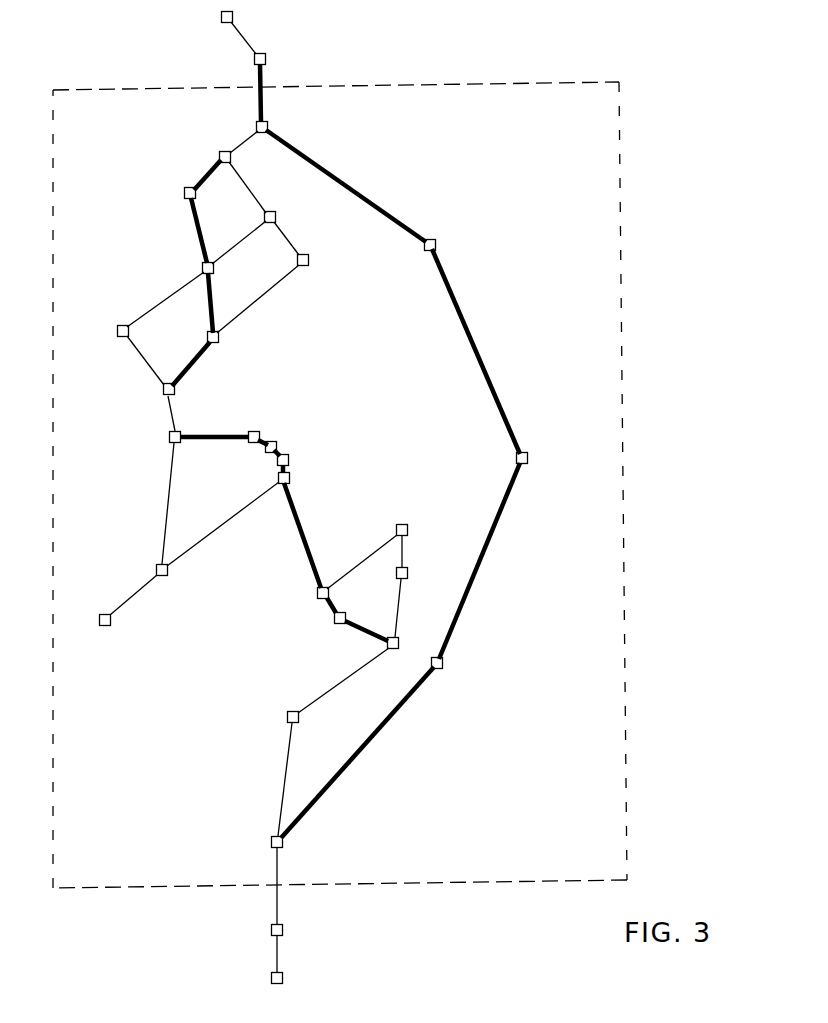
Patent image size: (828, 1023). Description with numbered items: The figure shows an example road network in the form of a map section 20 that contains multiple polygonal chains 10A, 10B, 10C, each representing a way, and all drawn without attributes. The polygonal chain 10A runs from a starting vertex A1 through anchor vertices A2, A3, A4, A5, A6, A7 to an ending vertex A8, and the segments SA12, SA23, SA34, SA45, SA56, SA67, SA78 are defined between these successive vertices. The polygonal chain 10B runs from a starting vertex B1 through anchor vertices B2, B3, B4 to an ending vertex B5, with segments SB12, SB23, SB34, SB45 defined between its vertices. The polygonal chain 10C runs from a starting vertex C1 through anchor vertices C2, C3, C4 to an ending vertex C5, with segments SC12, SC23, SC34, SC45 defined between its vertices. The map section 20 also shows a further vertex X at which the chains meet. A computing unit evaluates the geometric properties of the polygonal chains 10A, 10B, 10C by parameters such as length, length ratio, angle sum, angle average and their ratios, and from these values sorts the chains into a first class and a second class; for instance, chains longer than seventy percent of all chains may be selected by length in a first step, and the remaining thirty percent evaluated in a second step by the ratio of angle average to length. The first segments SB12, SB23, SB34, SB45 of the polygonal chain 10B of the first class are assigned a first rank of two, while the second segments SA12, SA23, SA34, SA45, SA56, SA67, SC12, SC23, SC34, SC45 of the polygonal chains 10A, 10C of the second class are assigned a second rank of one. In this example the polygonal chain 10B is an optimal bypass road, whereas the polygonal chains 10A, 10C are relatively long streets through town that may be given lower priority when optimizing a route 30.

The map section 20 is at (624, 282).
The route 30 is at (263, 34).
The polygonal chain 10A is at (267, 602).
The polygonal chain 10B is at (409, 465).
The polygonal chain 10C is at (229, 264).
The starting vertex A1 is at (400, 638).
The anchor vertex A2 is at (337, 625).
The anchor vertex A3 is at (316, 596).
The anchor vertex A4 is at (291, 470).
The anchor vertex A5 is at (289, 458).
The anchor vertex A6 is at (277, 442).
The anchor vertex A7 is at (254, 431).
The ending vertex A8 is at (168, 438).
The starting vertex B1 is at (284, 847).
The anchor vertex B2 is at (441, 671).
The anchor vertex B3 is at (530, 468).
The anchor vertex B4 is at (438, 243).
The ending vertex B5 is at (270, 128).
The starting vertex C1 is at (160, 392).
The anchor vertex C2 is at (221, 337).
The anchor vertex C3 is at (216, 267).
The anchor vertex C4 is at (184, 197).
The ending vertex C5 is at (222, 146).
The segment SA12 is at (362, 633).
The segment SA23 is at (322, 610).
The segment SA34 is at (300, 536).
The segment SA45 is at (288, 461).
The segment SA56 is at (282, 443).
The segment SA67 is at (268, 430).
The segment SA78 is at (214, 430).
The segment SB12 is at (362, 753).
The segment SB23 is at (477, 587).
The segment SB34 is at (482, 350).
The segment SB45 is at (396, 214).
The segment SC12 is at (205, 358).
The segment SC23 is at (207, 303).
The segment SC34 is at (196, 238).
The segment SC45 is at (204, 173).
The node X is at (252, 753).